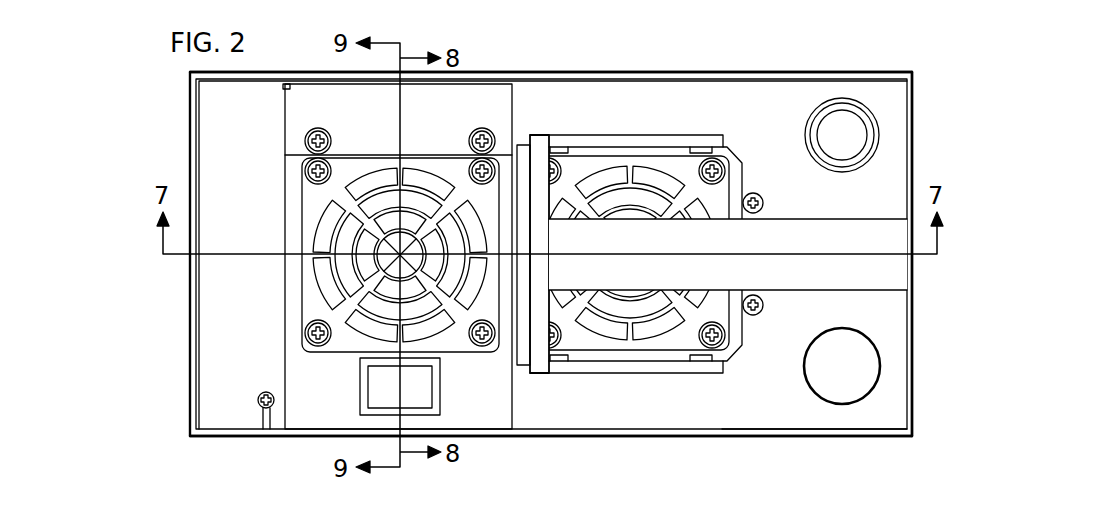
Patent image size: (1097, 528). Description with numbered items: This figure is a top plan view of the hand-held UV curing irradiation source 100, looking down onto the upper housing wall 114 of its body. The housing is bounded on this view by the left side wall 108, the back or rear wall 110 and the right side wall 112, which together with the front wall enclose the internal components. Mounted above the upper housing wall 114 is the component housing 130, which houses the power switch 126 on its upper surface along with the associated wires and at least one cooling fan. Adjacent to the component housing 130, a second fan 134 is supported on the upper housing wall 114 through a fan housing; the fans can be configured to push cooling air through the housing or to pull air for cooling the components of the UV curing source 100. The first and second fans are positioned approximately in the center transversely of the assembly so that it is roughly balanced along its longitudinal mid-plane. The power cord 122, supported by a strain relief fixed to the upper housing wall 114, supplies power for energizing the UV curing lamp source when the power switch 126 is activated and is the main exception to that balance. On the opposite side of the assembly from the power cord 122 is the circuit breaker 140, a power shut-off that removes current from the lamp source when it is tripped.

The UV curing irradiation source 100 is at (148, 99).
The left side wall 108 is at (567, 437).
The back or rear wall 110 is at (913, 400).
The right side wall 112 is at (637, 72).
The upper housing wall 114 is at (745, 413).
The power cord 122 is at (842, 118).
The power switch 126 is at (375, 390).
The component housing 130 is at (382, 251).
The second fan 134 is at (575, 165).
The circuit breaker 140 is at (840, 385).